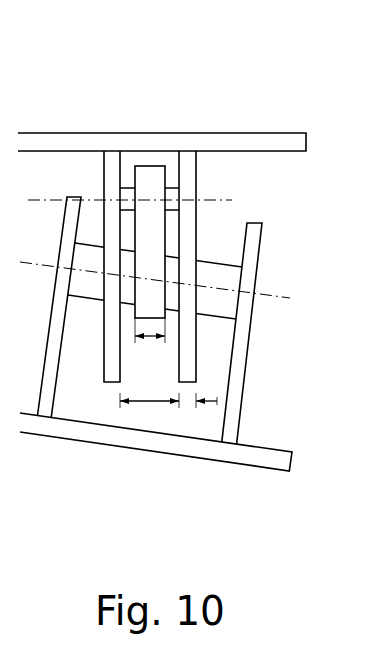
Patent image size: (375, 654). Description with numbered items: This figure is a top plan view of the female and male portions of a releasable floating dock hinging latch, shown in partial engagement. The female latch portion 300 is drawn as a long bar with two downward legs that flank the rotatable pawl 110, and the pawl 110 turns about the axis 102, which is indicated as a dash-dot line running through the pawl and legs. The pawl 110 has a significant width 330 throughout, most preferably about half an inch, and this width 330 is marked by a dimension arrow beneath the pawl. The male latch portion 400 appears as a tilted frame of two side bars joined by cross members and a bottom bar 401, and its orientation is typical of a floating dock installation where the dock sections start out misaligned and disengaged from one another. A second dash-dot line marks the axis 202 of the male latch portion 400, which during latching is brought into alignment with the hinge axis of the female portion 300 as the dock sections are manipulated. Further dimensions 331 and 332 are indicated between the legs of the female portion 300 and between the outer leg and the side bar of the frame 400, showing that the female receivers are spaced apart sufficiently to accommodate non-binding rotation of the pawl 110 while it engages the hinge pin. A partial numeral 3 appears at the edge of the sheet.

The female latch portion 300 is at (283, 118).
The rotatable pawl 110 is at (150, 173).
The axis 102 is at (225, 198).
The axis 202 is at (177, 289).
The latch portion 400 is at (265, 388).
The base bar of frame 401 is at (258, 468).
The width 330 is at (148, 342).
The gap between legs dimension 331 is at (152, 403).
The leg to frame dimension 332 is at (212, 403).
The partial reference numeral 3 is at (368, 36).